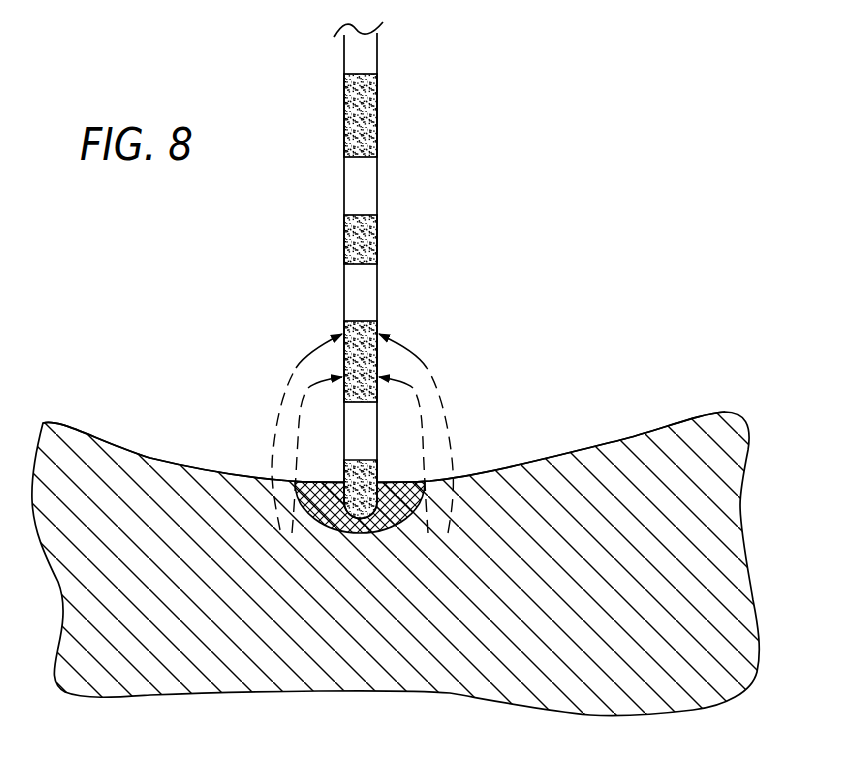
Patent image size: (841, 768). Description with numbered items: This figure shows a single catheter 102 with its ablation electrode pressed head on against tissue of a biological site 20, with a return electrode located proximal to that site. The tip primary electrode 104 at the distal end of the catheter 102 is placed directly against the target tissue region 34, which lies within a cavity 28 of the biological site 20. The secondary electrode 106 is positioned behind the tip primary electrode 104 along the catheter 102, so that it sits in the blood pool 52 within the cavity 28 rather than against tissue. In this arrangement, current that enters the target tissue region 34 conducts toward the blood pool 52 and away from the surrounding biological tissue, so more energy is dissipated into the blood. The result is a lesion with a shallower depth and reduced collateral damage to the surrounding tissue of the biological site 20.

The biological site 20 is at (742, 535).
The target tissue region 34 is at (250, 479).
The cavity 28 is at (518, 364).
The blood pool 52 is at (234, 358).
The single catheter 102 is at (365, 50).
The tip primary electrode 104 is at (377, 477).
The secondary electrode 106 is at (378, 359).